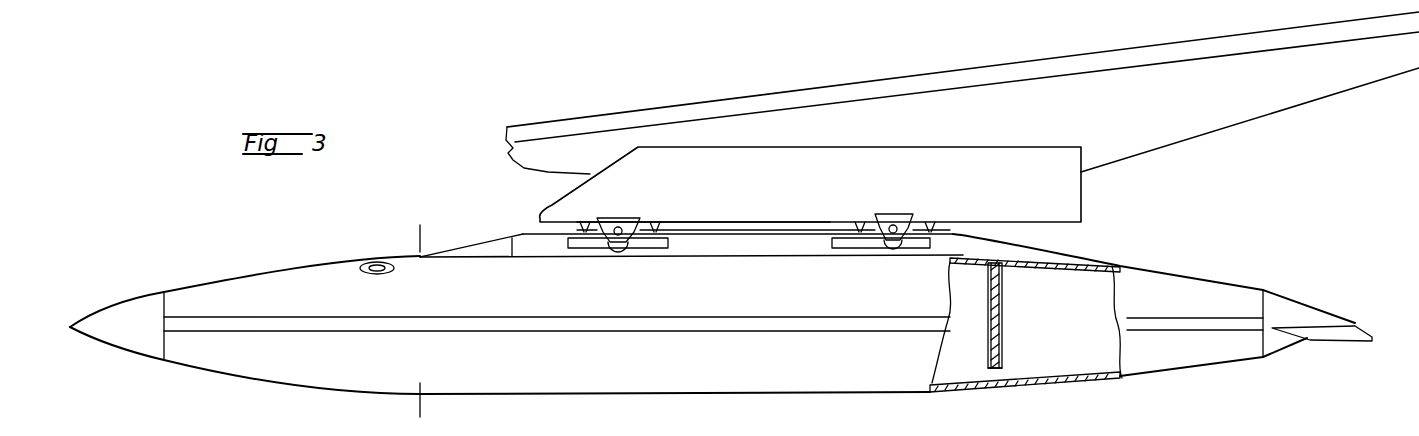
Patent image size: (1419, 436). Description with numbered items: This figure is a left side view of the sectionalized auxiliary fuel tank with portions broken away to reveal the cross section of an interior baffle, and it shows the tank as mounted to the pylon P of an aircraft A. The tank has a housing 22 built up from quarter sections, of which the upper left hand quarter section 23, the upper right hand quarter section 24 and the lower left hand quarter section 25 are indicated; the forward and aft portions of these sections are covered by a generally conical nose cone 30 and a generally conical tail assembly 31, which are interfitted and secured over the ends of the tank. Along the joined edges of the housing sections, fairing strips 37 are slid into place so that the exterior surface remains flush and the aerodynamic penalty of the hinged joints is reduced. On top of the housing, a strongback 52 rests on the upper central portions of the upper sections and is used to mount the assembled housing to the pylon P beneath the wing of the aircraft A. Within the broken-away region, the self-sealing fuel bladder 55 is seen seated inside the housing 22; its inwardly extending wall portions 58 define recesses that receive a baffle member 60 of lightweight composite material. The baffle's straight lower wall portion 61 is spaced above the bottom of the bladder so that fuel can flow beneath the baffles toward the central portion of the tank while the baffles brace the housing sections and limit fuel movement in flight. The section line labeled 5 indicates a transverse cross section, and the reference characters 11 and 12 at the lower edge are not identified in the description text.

The section line 5- 5 is at (416, 240).
The aircraft 11 is at (208, 435).
The undercarriage 12 is at (564, 430).
The housing 22 is at (783, 395).
The upper left hand quarter section 23 is at (267, 298).
The upper right hand quarter section 24 is at (461, 430).
The lower left hand quarter section 25 is at (557, 375).
The nose cone 30 is at (133, 320).
The tail assembly 31 is at (1321, 273).
The fairing strip 37 is at (1217, 318).
The strongback 52 is at (497, 238).
The fuel bladder 55 is at (963, 382).
The wall portion 58 is at (1002, 328).
The baffle member 60 is at (995, 298).
The lower wall portion 61 is at (998, 373).
The aircraft A is at (1188, 122).
The pylon P is at (1048, 193).